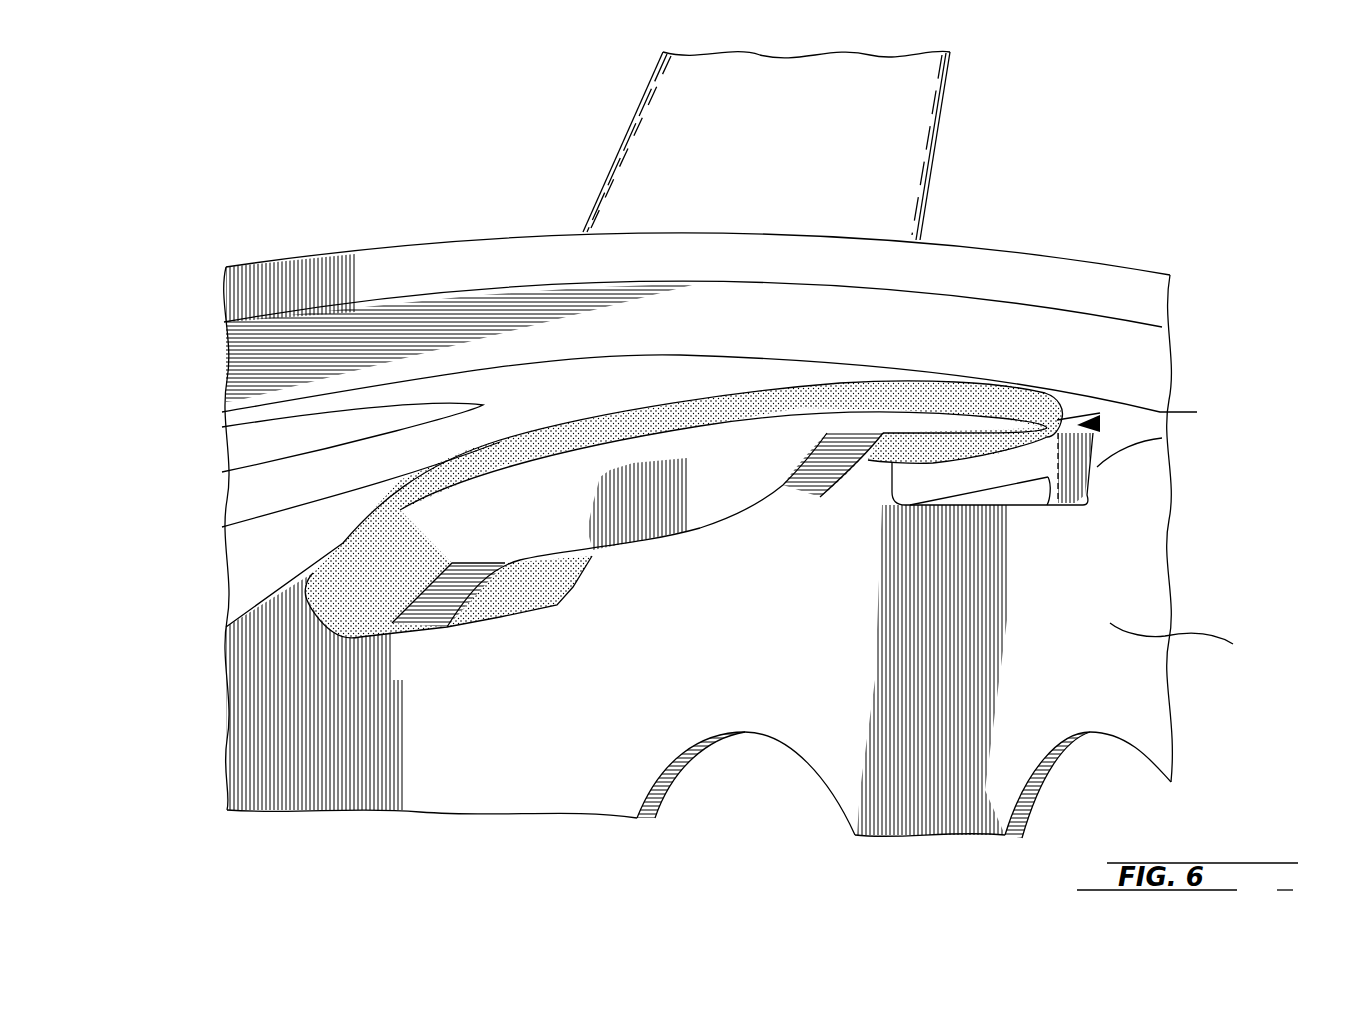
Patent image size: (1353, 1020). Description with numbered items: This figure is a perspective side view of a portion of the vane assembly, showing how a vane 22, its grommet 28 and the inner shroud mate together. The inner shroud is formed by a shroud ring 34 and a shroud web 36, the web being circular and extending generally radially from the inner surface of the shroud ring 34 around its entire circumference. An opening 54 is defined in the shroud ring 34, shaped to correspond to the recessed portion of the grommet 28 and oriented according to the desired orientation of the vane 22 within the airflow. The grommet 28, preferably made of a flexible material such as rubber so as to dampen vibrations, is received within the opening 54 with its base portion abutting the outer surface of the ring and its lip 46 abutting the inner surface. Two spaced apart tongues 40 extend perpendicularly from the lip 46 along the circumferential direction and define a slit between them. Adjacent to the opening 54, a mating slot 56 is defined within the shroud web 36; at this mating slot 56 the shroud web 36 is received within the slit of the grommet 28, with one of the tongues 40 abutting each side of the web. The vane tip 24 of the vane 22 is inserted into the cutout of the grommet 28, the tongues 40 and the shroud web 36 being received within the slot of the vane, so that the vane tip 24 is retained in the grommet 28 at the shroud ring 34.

The vane 22 is at (887, 125).
The vane tip 24 is at (743, 472).
The grommet 28 is at (316, 603).
The shroud ring 34 is at (275, 540).
The shroud web 36 is at (1188, 644).
The tongues 40 is at (367, 617).
The lip 46 is at (998, 437).
The opening 54 is at (302, 458).
The mating slot 56 is at (1053, 503).